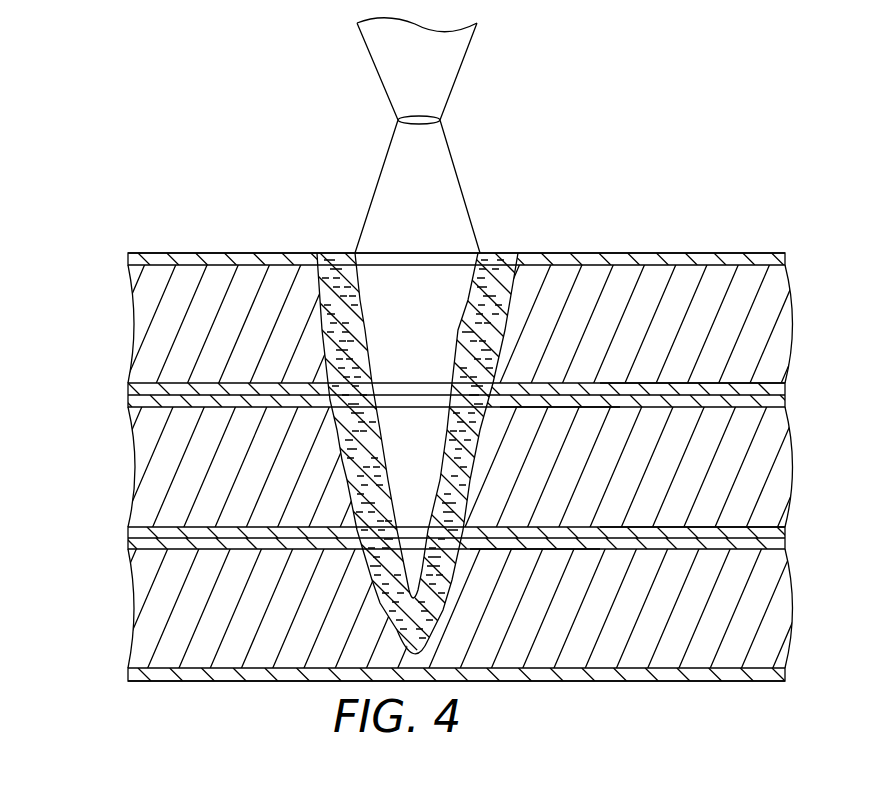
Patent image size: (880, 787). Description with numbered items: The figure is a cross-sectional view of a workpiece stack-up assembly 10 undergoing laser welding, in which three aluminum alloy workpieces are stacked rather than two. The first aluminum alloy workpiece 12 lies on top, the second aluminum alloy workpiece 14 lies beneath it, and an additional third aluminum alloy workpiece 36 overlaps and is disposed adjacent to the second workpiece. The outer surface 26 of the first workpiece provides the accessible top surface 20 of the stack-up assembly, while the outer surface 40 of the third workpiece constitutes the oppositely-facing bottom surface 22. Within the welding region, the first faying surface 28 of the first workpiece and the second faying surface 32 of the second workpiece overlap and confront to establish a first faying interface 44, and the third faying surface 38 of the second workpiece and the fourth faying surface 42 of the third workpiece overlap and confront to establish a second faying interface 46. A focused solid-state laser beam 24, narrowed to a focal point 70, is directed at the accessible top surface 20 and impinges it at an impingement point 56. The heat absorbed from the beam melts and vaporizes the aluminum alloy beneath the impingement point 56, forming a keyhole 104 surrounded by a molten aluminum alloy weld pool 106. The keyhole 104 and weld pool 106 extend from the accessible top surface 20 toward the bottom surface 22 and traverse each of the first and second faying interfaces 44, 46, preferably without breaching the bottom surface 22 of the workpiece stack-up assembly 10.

The workpiece stack-up assembly 10 is at (90, 414).
The first aluminum alloy workpiece 12 is at (796, 253).
The second aluminum alloy workpiece 14 is at (796, 395).
The third aluminum alloy workpiece 36 is at (796, 540).
The accessible top surface 20 is at (648, 245).
The bottom surface 22 is at (566, 694).
The laser beam 24 is at (460, 68).
The outer surface 26 is at (713, 255).
The first faying surface 28 is at (600, 390).
The second faying surface 32 is at (667, 396).
The first faying interface 44 is at (547, 412).
The third faying surface 38 is at (592, 535).
The fourth faying surface 42 is at (655, 540).
The second faying interface 46 is at (516, 553).
The outer surface 40 is at (652, 684).
The impingement point 56 is at (430, 252).
The focal point 70 is at (441, 118).
The keyhole 104 is at (452, 288).
The molten aluminum alloy weld pool 106 is at (343, 262).